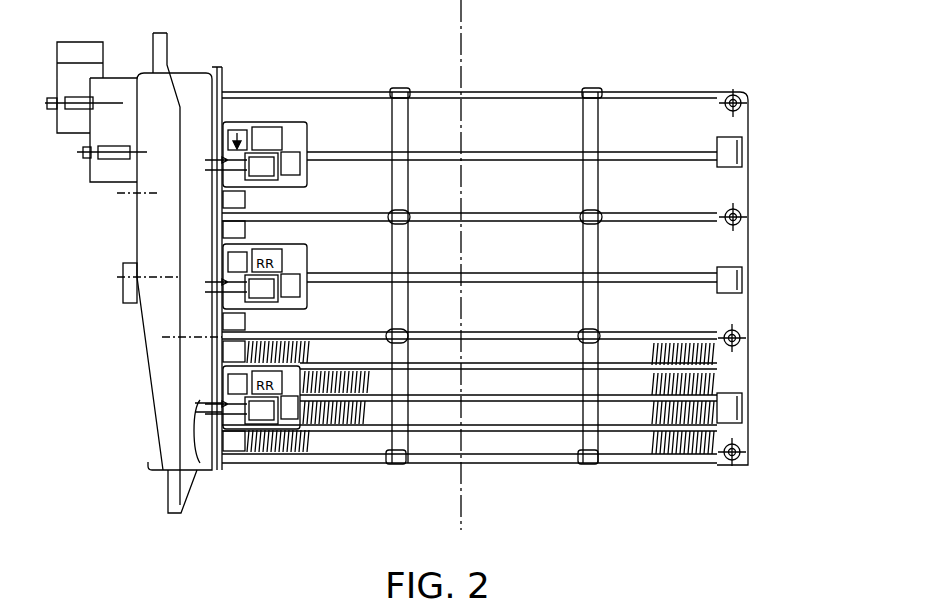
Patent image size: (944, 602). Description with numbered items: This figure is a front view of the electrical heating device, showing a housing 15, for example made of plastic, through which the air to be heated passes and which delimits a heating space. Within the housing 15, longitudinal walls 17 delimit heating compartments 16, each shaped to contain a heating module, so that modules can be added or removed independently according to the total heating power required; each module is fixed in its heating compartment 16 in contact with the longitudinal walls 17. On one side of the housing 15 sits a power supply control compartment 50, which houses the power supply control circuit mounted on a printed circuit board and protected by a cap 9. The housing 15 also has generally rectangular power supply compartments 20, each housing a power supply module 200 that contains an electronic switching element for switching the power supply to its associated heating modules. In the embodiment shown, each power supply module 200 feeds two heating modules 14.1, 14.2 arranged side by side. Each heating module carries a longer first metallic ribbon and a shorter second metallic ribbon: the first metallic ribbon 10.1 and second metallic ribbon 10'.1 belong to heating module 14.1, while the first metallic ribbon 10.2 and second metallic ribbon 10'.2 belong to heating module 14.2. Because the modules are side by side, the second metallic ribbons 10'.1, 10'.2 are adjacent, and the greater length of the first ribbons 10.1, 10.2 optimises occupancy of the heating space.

The cap 9 is at (137, 225).
The power supply control compartment 50 is at (185, 92).
The power supply module 200 is at (240, 120).
The power supply compartment 20 is at (288, 120).
The longitudinal wall 17 is at (422, 150).
The housing 15 is at (650, 92).
The heating compartment 16 is at (697, 128).
The first metallic ribbon 10.1 is at (715, 355).
The heating module 14.1 is at (716, 377).
The second metallic ribbon 10'.1 is at (738, 402).
The heating module 14.2 is at (716, 432).
The second metallic ribbon 10'.2 is at (656, 464).
The first metallic ribbon 10.2 is at (682, 457).